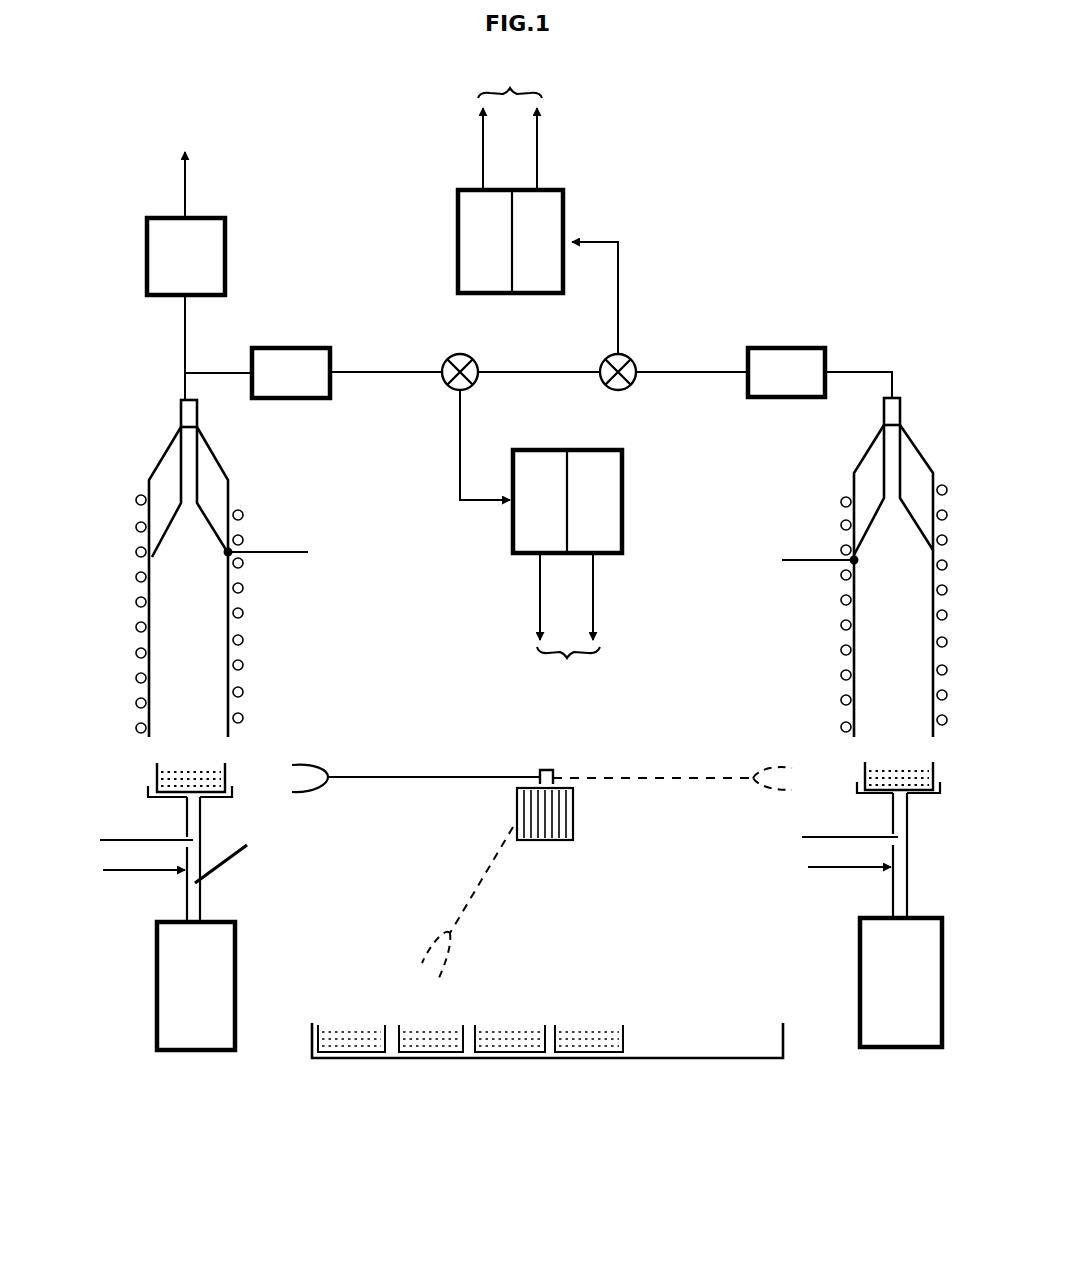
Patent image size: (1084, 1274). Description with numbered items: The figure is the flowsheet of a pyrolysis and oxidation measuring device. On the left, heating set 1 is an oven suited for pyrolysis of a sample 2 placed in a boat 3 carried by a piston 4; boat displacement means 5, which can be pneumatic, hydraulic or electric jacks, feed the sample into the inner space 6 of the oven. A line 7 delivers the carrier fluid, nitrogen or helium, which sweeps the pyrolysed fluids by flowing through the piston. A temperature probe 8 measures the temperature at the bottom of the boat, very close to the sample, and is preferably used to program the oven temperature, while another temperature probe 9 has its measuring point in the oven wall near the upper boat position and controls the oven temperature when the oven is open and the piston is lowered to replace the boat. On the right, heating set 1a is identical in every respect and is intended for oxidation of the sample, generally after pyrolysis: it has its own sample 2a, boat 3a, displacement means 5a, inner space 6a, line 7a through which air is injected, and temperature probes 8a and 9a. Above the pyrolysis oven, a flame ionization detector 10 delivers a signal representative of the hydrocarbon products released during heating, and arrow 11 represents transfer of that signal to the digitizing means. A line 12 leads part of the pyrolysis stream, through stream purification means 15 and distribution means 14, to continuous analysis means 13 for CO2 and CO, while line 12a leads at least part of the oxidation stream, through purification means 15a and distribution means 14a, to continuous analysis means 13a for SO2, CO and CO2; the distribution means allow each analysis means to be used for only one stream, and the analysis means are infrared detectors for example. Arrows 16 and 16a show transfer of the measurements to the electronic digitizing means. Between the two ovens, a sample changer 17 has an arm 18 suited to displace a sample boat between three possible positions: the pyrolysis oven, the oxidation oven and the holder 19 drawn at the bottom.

The heating set 1 is at (147, 424).
The heating set 1a is at (919, 418).
The sample 2 is at (157, 763).
The sample 2a is at (863, 762).
The boat 3 is at (157, 797).
The boat 3a is at (867, 797).
The piston 4 is at (230, 854).
The boat displacement means 5 is at (196, 986).
The boat displacement means 5a is at (901, 982).
The inner space of the oven 6 is at (208, 613).
The inner space of the oven 6a is at (880, 640).
The carrier fluid line 7 is at (122, 873).
The carrier fluid line 7a is at (840, 870).
The temperature probe 8 is at (110, 838).
The temperature probe 8a is at (817, 837).
The temperature probe 9 is at (265, 552).
The temperature probe 9a is at (803, 560).
The flame ionization detector 10 is at (186, 256).
The arrow 11 is at (182, 180).
The line 12 is at (207, 370).
The line 12a is at (857, 372).
The continuous analysis means 13 is at (628, 465).
The continuous analysis means 13a is at (579, 193).
The distribution means 14 is at (463, 353).
The distribution means 14a is at (618, 390).
The stream purification means 15 is at (347, 373).
The stream purification means 15a is at (786, 372).
The arrow 16 is at (568, 626).
The arrow 16a is at (510, 126).
The sample changer 17 is at (517, 800).
The arm 18 is at (388, 780).
The holder 19 is at (412, 1076).